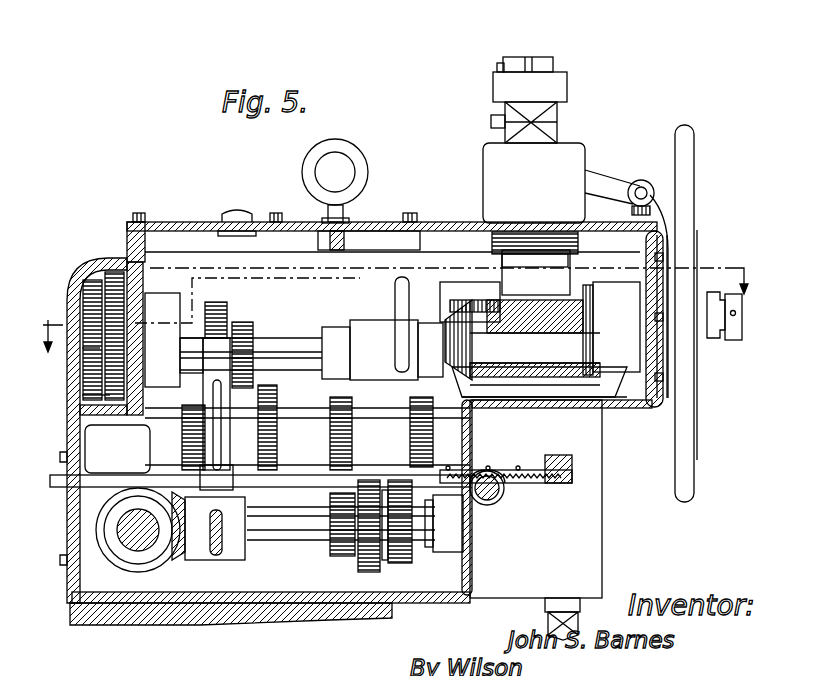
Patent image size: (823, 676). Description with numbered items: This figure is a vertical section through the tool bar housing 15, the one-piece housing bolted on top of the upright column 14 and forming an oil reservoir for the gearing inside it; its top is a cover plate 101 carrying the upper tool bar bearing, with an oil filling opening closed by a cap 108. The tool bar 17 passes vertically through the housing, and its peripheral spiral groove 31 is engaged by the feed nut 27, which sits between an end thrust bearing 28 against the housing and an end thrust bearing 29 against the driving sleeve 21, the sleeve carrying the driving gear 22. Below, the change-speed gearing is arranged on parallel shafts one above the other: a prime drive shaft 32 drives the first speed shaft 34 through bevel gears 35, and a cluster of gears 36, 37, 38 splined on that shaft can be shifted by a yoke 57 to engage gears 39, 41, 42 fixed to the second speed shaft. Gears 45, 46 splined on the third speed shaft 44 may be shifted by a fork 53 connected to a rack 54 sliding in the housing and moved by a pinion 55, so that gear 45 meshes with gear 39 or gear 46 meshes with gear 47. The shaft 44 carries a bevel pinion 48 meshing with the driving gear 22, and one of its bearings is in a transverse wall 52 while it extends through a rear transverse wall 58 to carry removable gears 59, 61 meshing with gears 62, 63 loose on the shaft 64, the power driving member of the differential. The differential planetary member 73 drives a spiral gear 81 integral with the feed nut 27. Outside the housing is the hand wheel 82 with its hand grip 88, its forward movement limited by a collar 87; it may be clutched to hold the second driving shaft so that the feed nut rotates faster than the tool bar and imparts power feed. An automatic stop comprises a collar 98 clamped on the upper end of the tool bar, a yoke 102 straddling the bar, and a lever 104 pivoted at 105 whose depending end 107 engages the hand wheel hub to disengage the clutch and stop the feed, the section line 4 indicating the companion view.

The section line 4- 4 is at (394, 290).
The upright column 14 is at (340, 605).
The tool bar housing 15 is at (428, 598).
The tool bar 17 is at (553, 57).
The driving sleeve 21 is at (520, 397).
The driving gear 22 is at (605, 385).
The feed nut 27 is at (560, 285).
The end thrust bearing 28 is at (500, 240).
The end thrust bearing 29 is at (588, 365).
The spiral groove 31 is at (500, 68).
The prime drive shaft 32 is at (150, 540).
The first speed shaft 34 is at (268, 545).
The bevel gears 35 is at (162, 555).
The cluster gear 36 is at (330, 535).
The cluster gear 37 is at (412, 558).
The cluster gear 38 is at (362, 560).
The gear 39 is at (277, 405).
The gear 41 is at (410, 422).
The gear 42 is at (352, 407).
The third speed shaft 44 is at (300, 345).
The gear 45 is at (245, 322).
The gear 46 is at (217, 302).
The gear 47 is at (182, 414).
The bevel pinion 48 is at (440, 335).
The transverse wall 52 is at (380, 310).
The shifter fork 53 is at (150, 440).
The rack 54 is at (560, 465).
The pinion 55 is at (500, 492).
The yoke 57 is at (384, 555).
The rear transverse wall 58 is at (140, 310).
The gear 59 is at (82, 350).
The gear 61 is at (85, 395).
The gear 62 is at (107, 275).
The gear 63 is at (82, 295).
The shaft 64 is at (247, 287).
The planetary member 73 is at (472, 300).
The spiral gear 81 is at (530, 303).
The hand wheel 82 is at (695, 440).
The collar 87 is at (735, 340).
The hand grip 88 is at (713, 340).
The collar 98 is at (558, 85).
The cover plate 101 is at (135, 235).
The yoke 102 is at (505, 120).
The lever 104 is at (605, 180).
The pivot 105 is at (643, 188).
The depending end 107 is at (662, 235).
The cap 108 is at (198, 222).